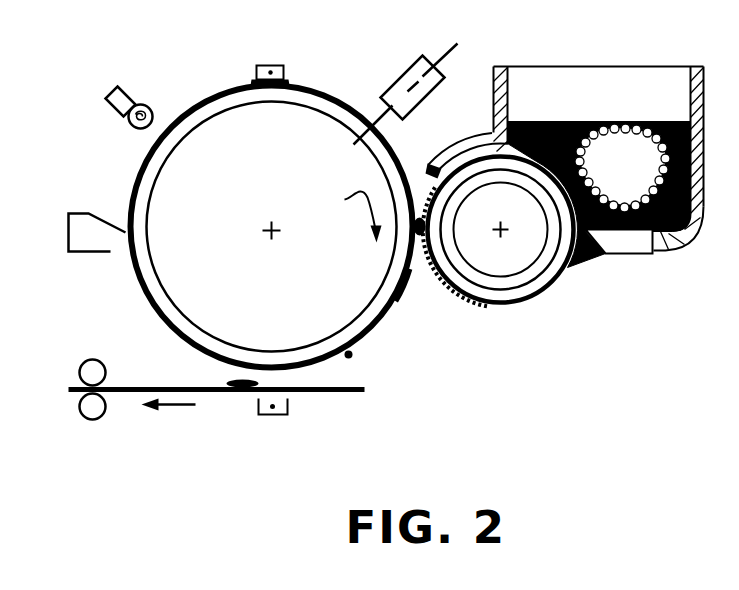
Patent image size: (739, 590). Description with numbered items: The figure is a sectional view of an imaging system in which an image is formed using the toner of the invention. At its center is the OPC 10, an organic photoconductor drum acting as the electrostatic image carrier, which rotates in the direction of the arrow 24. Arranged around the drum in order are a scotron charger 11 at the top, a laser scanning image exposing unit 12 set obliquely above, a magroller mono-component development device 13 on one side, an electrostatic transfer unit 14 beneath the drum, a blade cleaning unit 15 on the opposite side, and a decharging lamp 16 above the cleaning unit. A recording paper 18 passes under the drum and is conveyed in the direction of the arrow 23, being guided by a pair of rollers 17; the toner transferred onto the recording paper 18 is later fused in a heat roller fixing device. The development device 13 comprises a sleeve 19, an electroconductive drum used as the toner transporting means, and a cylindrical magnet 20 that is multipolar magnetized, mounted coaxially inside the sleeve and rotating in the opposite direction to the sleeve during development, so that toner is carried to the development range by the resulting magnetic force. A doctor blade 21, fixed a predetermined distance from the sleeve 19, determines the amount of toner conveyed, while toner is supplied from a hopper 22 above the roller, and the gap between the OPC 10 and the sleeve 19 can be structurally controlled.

The OPC 10 is at (327, 91).
The scotron charger 11 is at (267, 63).
The laser scanning image exposing unit 12 is at (403, 66).
The magroller mono-component development device 13 is at (565, 207).
The electrostatic transfer unit 14 is at (273, 414).
The blade cleaning unit 15 is at (68, 236).
The decharging lamp 16 is at (104, 100).
The feed rollers 17 is at (95, 415).
The recording paper 18 is at (345, 394).
The sleeve 19 is at (562, 259).
The cylindrical magnet 20 is at (535, 288).
The doctor blade 21 is at (641, 291).
The toner hopper 22 is at (593, 86).
The arrow 23 is at (180, 406).
The arrow 24 is at (342, 210).